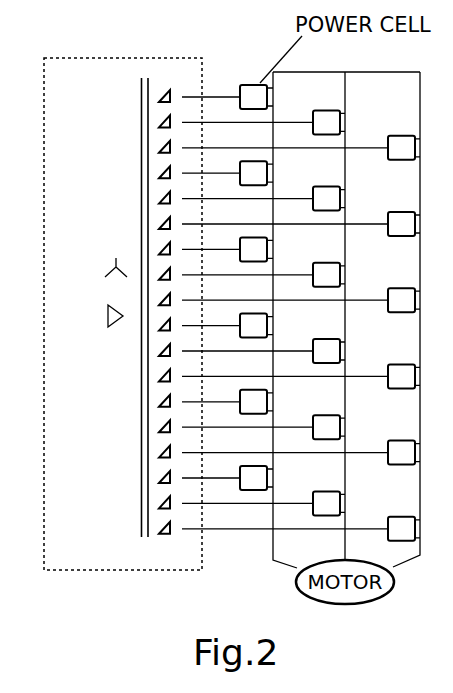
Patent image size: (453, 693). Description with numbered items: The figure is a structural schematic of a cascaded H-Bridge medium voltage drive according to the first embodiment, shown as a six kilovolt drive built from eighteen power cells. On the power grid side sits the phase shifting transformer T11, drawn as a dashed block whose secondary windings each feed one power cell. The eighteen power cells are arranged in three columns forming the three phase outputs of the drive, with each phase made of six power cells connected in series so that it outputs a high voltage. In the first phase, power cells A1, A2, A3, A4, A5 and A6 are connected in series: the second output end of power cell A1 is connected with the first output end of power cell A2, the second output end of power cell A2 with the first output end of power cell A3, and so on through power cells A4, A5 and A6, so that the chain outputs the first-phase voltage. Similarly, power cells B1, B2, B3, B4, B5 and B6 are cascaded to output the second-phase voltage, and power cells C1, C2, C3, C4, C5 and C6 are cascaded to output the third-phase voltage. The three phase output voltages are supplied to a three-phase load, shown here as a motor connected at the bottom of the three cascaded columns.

The phase shifting transformer T11 is at (75, 55).
The power cell A1 is at (256, 97).
The power cell B1 is at (329, 122).
The power cell C1 is at (404, 148).
The power cell A2 is at (256, 173).
The power cell B2 is at (329, 199).
The power cell C2 is at (404, 224).
The power cell A3 is at (256, 249).
The power cell B3 is at (329, 275).
The power cell C3 is at (404, 300).
The power cell A4 is at (256, 326).
The power cell B4 is at (329, 351).
The power cell C4 is at (404, 376).
The power cell A5 is at (256, 402).
The power cell B5 is at (329, 427).
The power cell C5 is at (404, 453).
The power cell A6 is at (256, 478).
The power cell B6 is at (329, 503).
The power cell C6 is at (404, 529).